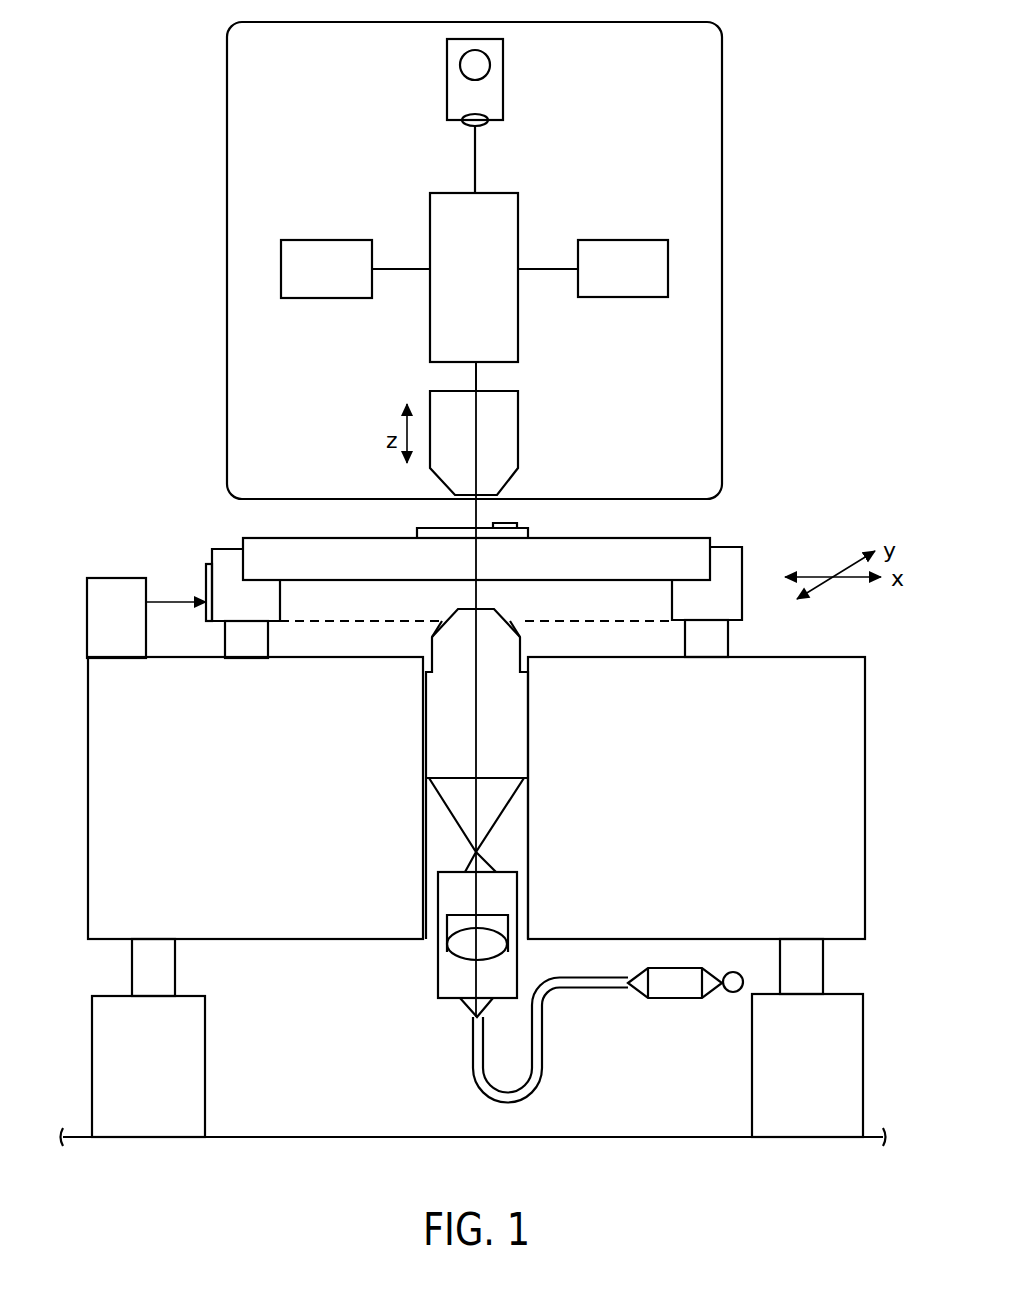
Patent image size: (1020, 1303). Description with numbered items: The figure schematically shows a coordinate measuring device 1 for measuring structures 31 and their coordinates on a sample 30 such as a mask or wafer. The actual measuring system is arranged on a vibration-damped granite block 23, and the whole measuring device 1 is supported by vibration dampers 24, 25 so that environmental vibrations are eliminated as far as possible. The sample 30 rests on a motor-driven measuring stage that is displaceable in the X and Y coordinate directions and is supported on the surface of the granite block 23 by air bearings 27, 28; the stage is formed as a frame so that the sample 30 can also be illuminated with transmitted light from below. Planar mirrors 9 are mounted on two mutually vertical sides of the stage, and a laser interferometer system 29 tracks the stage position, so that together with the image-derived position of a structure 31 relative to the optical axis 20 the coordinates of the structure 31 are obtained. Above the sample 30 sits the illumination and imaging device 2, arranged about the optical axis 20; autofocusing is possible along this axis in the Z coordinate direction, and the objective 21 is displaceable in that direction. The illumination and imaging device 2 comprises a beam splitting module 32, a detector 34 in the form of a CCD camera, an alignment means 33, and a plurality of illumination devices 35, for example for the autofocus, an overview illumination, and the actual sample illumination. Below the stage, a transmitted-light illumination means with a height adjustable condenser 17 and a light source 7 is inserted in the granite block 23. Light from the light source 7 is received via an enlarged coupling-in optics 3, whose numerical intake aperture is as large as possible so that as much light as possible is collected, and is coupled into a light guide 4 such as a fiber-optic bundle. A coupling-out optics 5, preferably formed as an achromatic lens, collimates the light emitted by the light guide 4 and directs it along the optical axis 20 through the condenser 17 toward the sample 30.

The measuring device 1 is at (266, 1110).
The illumination and imaging device 2 is at (697, 140).
The coupling-in optics 3 is at (675, 988).
The light guide 4 is at (477, 1080).
The coupling-out optics 5 is at (450, 977).
The light source 7 is at (732, 990).
The planar mirrors 9 is at (207, 573).
The height adjustable condenser 17 is at (514, 682).
The optical axis 20 is at (477, 380).
The objective 21 is at (503, 433).
The granite block 23 is at (103, 730).
The vibration damper 24 is at (810, 953).
The vibration damper 25 is at (143, 955).
The air bearing 27 is at (707, 642).
The air bearing 28 is at (222, 560).
The laser interferometer system 29 is at (117, 592).
The sample 30 is at (673, 555).
The structures 31 is at (518, 533).
The beam splitting module 32 is at (448, 323).
The alignment means 33 is at (458, 88).
The detector 34 is at (623, 248).
The illumination devices 35 is at (328, 248).